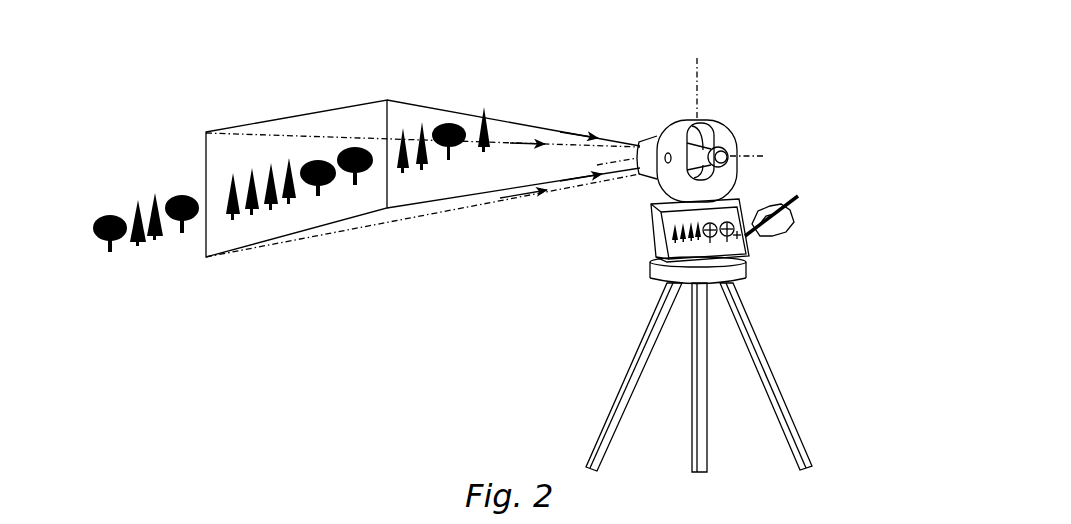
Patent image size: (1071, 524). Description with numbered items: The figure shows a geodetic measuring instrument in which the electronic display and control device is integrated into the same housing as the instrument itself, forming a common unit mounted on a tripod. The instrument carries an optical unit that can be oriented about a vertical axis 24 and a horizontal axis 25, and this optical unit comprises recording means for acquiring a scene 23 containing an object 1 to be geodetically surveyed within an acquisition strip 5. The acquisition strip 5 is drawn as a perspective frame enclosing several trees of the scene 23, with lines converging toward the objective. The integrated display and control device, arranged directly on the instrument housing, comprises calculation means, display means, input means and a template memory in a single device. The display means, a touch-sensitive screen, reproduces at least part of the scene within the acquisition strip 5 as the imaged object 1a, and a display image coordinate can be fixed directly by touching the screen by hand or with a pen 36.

The object 1 is at (358, 123).
The imaged object 1a is at (778, 166).
The acquisition strip 5 is at (423, 141).
The scene 23 is at (171, 139).
The vertical axis 24 is at (652, 72).
The horizontal axis 25 is at (772, 160).
The pen 36 is at (814, 223).